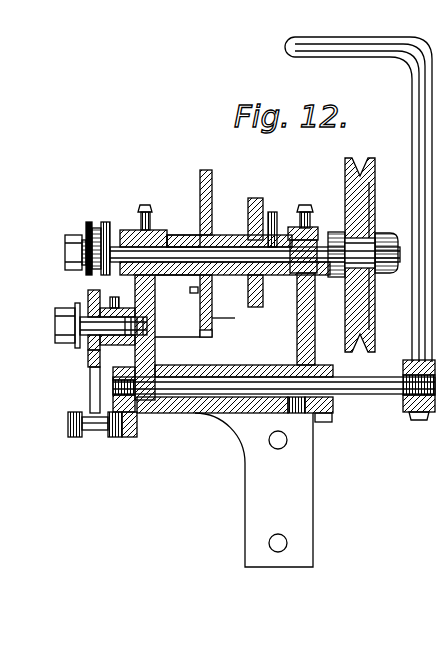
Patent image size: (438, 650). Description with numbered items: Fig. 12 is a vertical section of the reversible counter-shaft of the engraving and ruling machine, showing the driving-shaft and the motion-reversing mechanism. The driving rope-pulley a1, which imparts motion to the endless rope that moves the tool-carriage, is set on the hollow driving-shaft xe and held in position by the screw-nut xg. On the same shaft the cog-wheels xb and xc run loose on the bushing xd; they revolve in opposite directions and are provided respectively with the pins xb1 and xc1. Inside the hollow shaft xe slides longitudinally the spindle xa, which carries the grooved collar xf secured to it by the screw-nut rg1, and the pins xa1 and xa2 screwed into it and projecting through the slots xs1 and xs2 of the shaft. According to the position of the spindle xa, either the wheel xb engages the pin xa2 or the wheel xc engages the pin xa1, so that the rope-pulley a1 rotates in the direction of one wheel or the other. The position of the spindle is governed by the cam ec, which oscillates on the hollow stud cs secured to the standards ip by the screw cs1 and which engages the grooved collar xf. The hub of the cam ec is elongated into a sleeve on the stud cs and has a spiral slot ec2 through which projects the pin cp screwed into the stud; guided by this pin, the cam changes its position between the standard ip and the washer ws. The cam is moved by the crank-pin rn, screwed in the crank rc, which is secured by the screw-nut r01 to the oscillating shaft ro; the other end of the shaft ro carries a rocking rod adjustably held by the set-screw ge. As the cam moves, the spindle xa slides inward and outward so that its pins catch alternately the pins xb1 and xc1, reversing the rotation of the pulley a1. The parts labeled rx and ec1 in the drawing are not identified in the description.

The screw-nut rg1 is at (65, 258).
The grooved collar xf is at (100, 224).
The spindle xa is at (125, 232).
The slot xs1 is at (151, 226).
The pin xa1 is at (182, 234).
The cog-wheel xc is at (200, 172).
The cog-wheel xb is at (256, 198).
The pin xb1 is at (282, 208).
The pin xa2 is at (303, 214).
The slot xs2 is at (292, 266).
The hollow driving-shaft xe is at (335, 278).
The driving rope-pulley a1 is at (378, 328).
The screw-nut xg is at (381, 235).
The washer ws is at (57, 310).
The pin cp is at (90, 300).
The spiral slot ec2 is at (122, 297).
The hollow stud cs is at (89, 353).
The cam ec is at (90, 388).
The crank-pin rn is at (99, 433).
The crank rc is at (137, 431).
The screw-nut r01 is at (122, 372).
The oscillating shaft ro is at (378, 397).
The rib rx is at (215, 306).
The bushing xd is at (190, 290).
The pin xc1 is at (160, 292).
The screw cs1 is at (197, 320).
The standards ip is at (213, 318).
The bracket ec1 is at (192, 414).
The set-screw ge is at (418, 421).